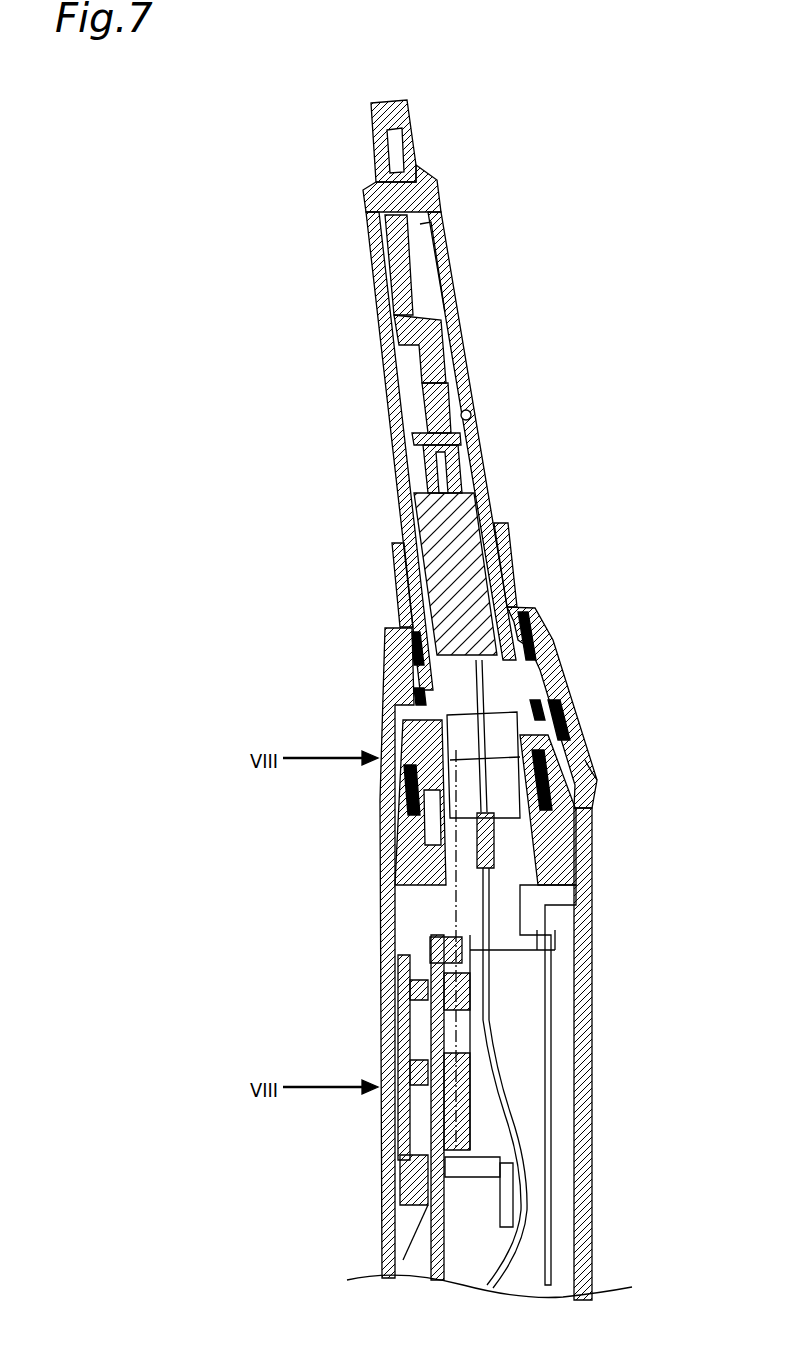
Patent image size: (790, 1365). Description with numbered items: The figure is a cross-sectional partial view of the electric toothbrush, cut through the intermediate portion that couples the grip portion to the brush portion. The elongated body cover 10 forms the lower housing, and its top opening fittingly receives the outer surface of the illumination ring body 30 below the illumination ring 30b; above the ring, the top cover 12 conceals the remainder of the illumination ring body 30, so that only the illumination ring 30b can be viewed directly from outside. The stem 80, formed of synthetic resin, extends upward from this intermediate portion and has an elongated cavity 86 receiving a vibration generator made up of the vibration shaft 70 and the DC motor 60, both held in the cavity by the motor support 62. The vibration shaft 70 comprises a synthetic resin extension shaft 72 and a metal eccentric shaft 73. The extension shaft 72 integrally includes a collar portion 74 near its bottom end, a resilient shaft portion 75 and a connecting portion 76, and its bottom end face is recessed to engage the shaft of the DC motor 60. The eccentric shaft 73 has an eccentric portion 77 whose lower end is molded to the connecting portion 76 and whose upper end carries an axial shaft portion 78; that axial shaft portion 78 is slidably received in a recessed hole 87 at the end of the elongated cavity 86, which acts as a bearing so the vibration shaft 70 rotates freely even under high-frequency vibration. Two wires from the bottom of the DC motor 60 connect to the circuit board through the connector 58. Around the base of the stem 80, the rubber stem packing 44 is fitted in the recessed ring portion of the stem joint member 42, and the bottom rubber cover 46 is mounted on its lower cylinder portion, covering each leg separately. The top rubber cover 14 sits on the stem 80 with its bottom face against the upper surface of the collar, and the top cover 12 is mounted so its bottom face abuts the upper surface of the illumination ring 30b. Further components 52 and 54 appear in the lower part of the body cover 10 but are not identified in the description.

The body cover 10 is at (585, 940).
The top cover 12 is at (560, 680).
The top rubber cover 14 is at (410, 645).
The illumination ring body 30 is at (568, 825).
The illumination ring 30b is at (595, 793).
The stem joint member 42 is at (575, 728).
The stem packing 44 is at (382, 805).
The bottom rubber cover 46 is at (488, 850).
The spring 52 is at (430, 1180).
The guide member 54 is at (440, 933).
The connector 58 is at (560, 885).
The DC motor 60 is at (440, 568).
The motor support 62 is at (430, 720).
The vibration shaft 70 is at (242, 205).
The extension shaft 72 is at (303, 380).
The eccentric shaft 73 is at (303, 167).
The collar portion 74 is at (428, 447).
The resilient shaft portion 75 is at (420, 416).
The connecting portion 76 is at (410, 384).
The eccentric portion 77 is at (394, 256).
The axial shaft portion 78 is at (392, 172).
The stem 80 is at (453, 247).
The elongated cavity 86 is at (471, 417).
The recessed hole 87 is at (406, 166).